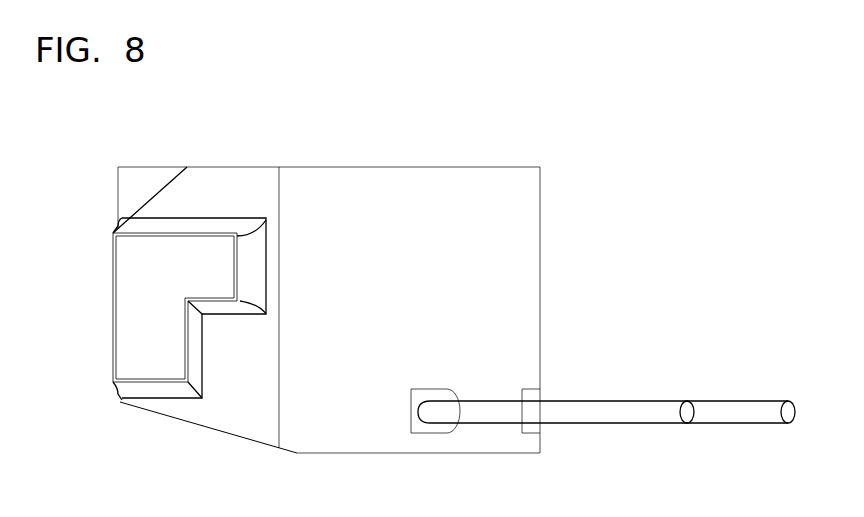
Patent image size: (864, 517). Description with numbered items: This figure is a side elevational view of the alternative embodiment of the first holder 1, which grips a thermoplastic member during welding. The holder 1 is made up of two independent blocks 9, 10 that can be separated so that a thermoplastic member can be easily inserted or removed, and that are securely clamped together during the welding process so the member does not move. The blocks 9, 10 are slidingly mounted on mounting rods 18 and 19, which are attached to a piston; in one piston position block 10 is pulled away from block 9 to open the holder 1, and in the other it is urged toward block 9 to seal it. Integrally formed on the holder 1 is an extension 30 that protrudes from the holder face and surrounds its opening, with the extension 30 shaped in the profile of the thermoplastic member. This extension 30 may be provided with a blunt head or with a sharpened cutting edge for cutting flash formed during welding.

The first holder 1 is at (577, 115).
The block 9 is at (128, 181).
The block 10 is at (382, 188).
The mounting rod 18 is at (610, 412).
The mounting rod 19 is at (752, 412).
The extension 30 is at (140, 383).